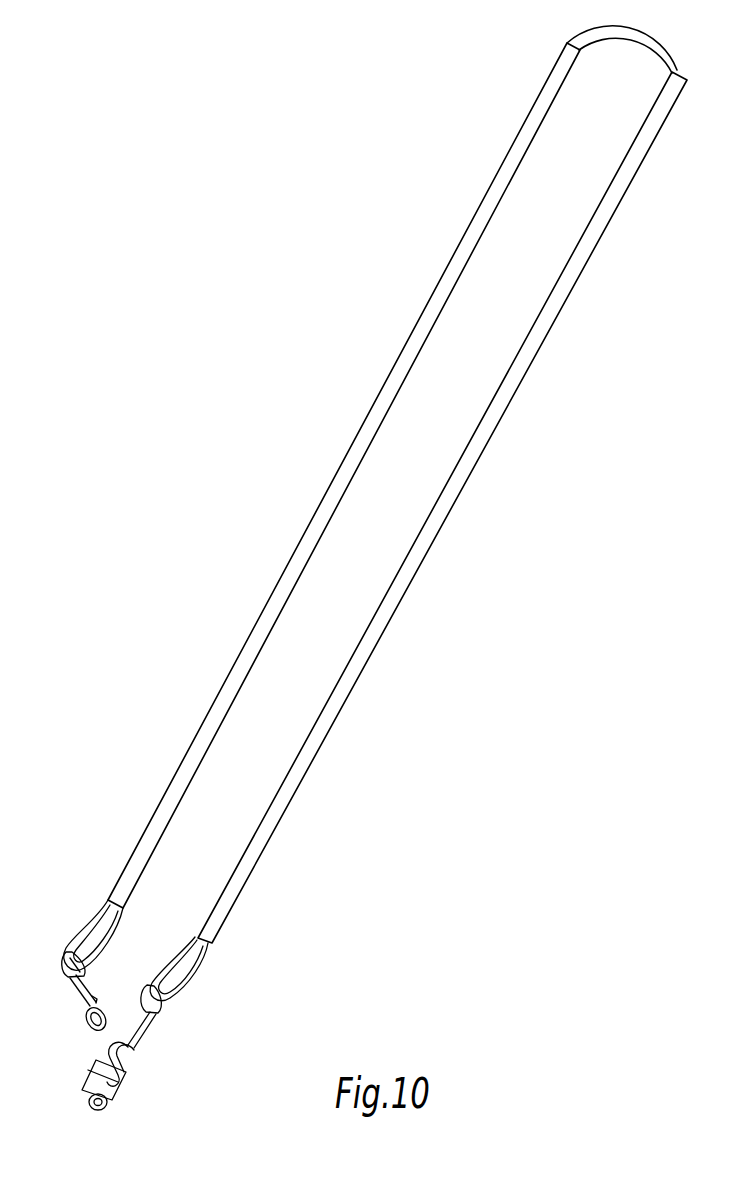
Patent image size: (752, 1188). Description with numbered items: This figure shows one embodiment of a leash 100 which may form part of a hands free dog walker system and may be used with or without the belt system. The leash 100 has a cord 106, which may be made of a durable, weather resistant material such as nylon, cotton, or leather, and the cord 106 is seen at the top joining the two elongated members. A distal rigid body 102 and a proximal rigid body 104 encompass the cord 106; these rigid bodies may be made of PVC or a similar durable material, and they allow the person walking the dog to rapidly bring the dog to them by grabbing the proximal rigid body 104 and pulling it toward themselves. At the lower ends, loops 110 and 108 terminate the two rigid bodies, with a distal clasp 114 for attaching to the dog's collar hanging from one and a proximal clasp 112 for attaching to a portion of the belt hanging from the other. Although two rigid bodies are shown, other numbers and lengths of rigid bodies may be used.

The leash 100 is at (245, 508).
The distal rigid body 102 is at (400, 357).
The proximal rigid body 104 is at (518, 356).
The cord 106 is at (647, 41).
The second loop 108 is at (175, 997).
The first loop 110 is at (82, 937).
The proximal clasp 112 is at (112, 1043).
The distal clasp 114 is at (80, 1000).